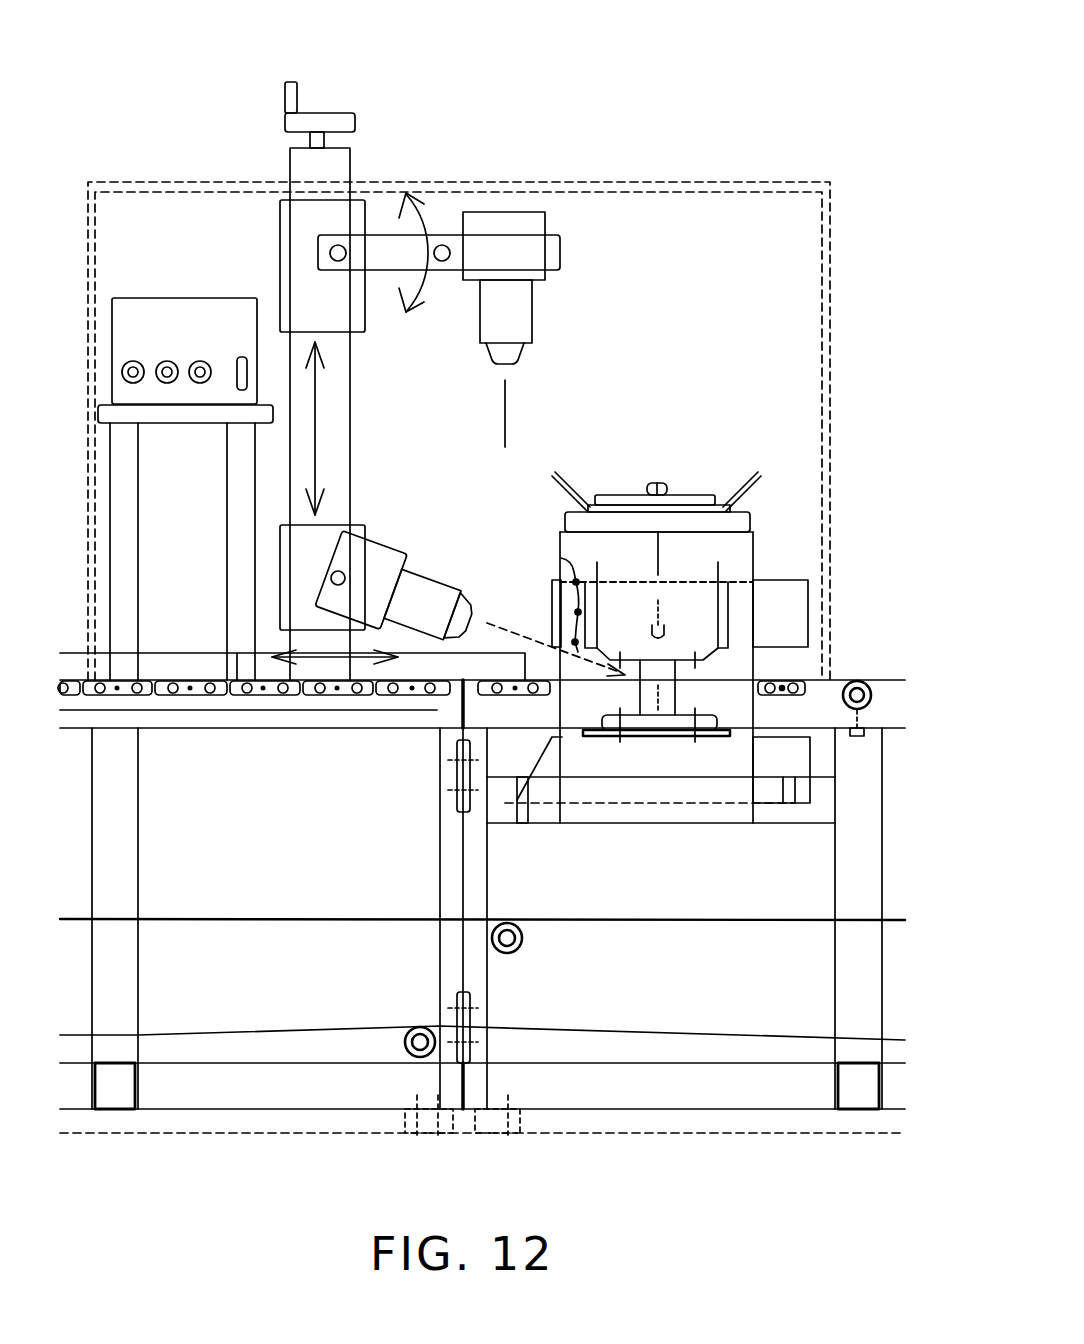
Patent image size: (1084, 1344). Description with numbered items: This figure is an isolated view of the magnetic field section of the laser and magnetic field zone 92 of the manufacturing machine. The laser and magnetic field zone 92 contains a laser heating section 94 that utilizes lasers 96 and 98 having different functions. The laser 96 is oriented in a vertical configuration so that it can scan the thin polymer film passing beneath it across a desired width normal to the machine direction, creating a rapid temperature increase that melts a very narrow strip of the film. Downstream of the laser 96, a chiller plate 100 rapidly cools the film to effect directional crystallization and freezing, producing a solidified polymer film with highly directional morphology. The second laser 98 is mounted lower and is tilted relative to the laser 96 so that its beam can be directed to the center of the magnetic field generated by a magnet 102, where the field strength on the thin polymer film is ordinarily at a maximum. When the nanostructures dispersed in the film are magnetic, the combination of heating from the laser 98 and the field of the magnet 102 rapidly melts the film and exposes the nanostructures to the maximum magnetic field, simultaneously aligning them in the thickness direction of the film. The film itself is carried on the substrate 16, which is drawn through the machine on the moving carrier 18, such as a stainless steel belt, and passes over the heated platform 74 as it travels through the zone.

The laser and magnetic field zone 92 is at (236, 93).
The laser heating section 94 is at (441, 166).
The laser 96 is at (522, 318).
The laser 98 is at (430, 583).
The chiller plate 100 is at (797, 682).
The heated platform 74 is at (262, 694).
The magnet 102 is at (693, 548).
The substrate 16 is at (583, 688).
The moving carrier 18 is at (858, 925).